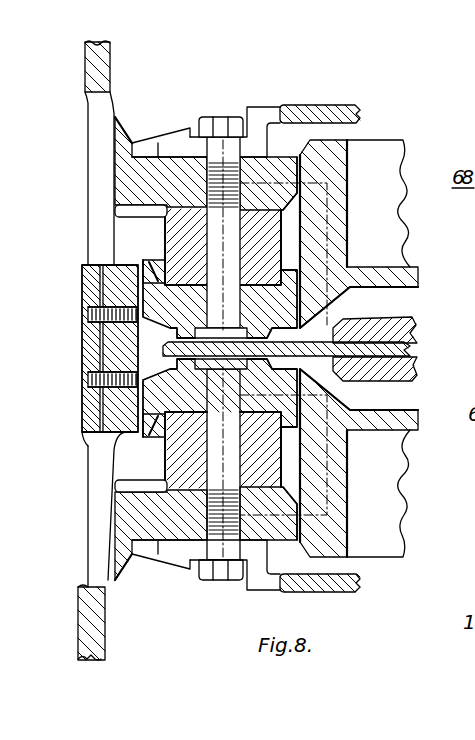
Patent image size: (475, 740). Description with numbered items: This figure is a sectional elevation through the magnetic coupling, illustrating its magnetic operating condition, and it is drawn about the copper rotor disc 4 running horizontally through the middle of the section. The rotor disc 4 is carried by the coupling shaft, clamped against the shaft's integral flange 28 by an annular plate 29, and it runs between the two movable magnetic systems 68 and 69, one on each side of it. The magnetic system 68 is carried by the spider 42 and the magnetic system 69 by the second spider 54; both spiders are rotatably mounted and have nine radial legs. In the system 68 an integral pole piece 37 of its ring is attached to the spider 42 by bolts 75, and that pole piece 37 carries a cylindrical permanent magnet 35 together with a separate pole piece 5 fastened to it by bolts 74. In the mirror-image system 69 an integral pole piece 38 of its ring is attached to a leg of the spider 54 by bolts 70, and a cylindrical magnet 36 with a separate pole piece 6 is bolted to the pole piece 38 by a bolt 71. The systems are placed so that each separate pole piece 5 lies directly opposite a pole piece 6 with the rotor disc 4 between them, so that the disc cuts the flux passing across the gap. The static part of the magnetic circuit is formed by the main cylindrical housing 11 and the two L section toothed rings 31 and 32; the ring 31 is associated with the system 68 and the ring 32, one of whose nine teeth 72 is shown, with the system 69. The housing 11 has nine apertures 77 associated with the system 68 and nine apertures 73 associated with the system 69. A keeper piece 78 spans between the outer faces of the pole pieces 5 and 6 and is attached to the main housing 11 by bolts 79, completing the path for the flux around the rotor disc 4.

The copper rotor disc 4 is at (410, 342).
The separate pole piece 5 is at (153, 262).
The separate pole piece 6 is at (83, 429).
The main cylindrical housing 11 is at (83, 637).
The integral flange 28 is at (413, 383).
The annular plate 29 is at (400, 327).
The L section toothed ring 31 is at (388, 160).
The L-sectioned toothed ring 32 is at (393, 513).
The permanent magnet 35 is at (190, 218).
The permanent magnet 36 is at (185, 462).
The integral pole piece 37 is at (158, 176).
The integral pole piece 38 is at (140, 520).
The spider 42 is at (332, 113).
The second spider 54 is at (215, 552).
The magnetic system 68 is at (124, 167).
The magnetic system 69 is at (124, 503).
The bolt 70 is at (218, 123).
The bolt 71 is at (168, 443).
The tooth 72 is at (350, 512).
The aperture 73 is at (95, 562).
The bolt 74 is at (187, 223).
The bolt 75 is at (347, 223).
The aperture 77 is at (103, 237).
The keeper piece 78 is at (108, 352).
The bolt 79 is at (88, 315).